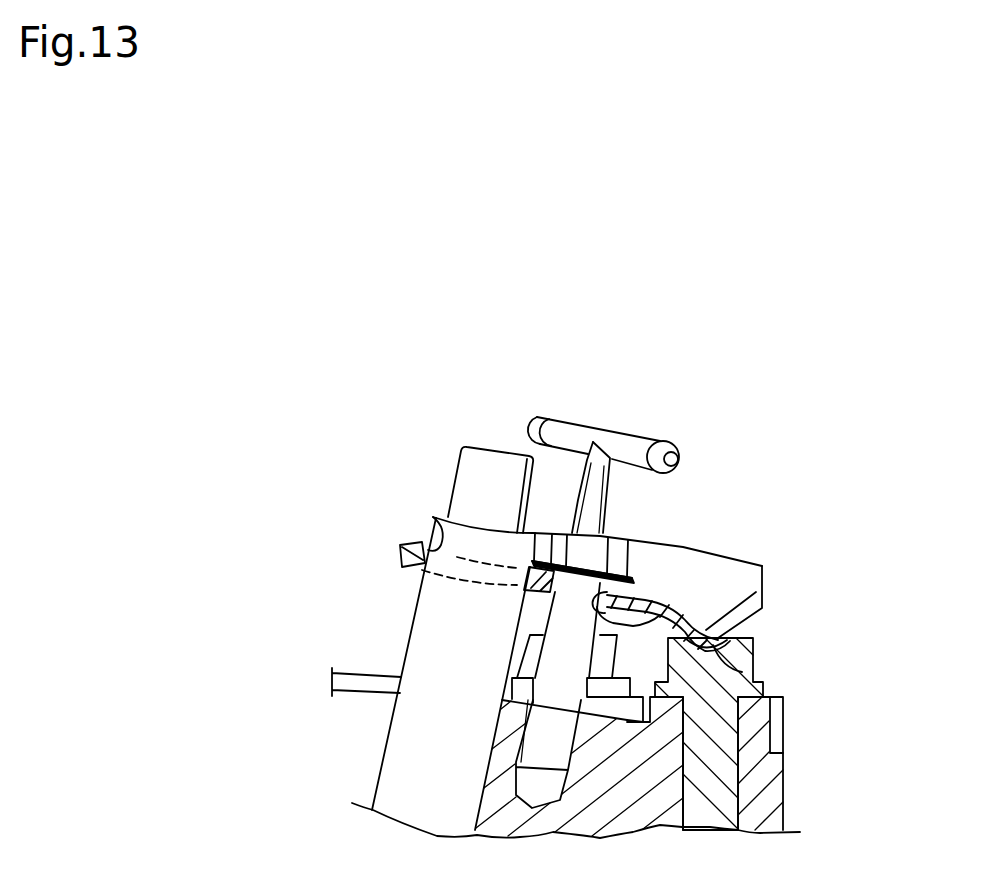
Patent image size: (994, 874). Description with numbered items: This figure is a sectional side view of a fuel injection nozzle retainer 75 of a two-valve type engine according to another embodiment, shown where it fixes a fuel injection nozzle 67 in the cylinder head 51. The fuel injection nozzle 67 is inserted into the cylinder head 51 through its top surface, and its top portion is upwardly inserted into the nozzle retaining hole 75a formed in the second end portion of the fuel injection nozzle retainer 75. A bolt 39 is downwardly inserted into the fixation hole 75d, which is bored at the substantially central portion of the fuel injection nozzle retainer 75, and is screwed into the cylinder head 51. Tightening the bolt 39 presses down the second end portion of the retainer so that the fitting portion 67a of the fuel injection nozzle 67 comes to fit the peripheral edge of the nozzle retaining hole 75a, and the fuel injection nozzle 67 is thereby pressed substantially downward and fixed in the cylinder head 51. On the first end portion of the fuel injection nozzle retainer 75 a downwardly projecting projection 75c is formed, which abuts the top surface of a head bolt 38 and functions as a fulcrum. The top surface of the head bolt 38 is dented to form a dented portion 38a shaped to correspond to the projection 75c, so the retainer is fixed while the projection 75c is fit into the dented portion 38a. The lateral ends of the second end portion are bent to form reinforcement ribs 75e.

The fuel injection nozzle 67 is at (490, 468).
The fitting portion 67a is at (425, 567).
The nozzle retaining hole 75a is at (430, 522).
The bolt 39 is at (594, 556).
The fuel injection nozzle retainer 75 is at (708, 552).
The fixation hole 75d is at (687, 551).
The reinforcement rib 75e is at (743, 570).
The projection 75c is at (743, 632).
The dented portion 38a is at (703, 652).
The head bolt 38 is at (723, 769).
The cylinder head 51 is at (788, 812).